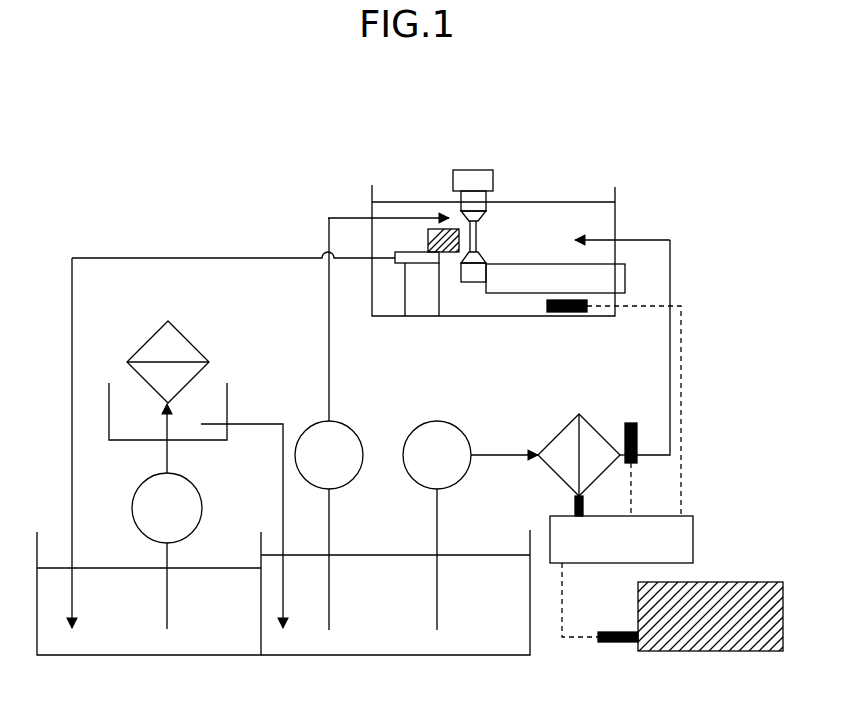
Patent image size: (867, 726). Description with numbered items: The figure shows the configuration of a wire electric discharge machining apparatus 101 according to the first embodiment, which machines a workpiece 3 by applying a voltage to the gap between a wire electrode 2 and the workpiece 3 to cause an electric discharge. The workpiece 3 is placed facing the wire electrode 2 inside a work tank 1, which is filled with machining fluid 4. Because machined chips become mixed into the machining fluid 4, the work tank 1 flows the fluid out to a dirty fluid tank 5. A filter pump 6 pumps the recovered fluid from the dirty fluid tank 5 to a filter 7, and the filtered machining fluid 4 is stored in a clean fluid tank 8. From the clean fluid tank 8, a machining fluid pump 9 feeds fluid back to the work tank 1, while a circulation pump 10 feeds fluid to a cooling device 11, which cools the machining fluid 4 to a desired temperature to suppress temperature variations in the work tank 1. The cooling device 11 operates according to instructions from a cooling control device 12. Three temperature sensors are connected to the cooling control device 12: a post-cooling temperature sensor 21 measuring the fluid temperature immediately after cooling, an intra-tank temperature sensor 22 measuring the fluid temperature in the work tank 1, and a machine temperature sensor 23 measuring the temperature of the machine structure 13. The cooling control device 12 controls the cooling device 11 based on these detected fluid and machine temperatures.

The wire electric discharge machining apparatus 101 is at (662, 133).
The work tank 1 is at (615, 209).
The wire electrode 2 is at (478, 235).
The workpiece 3 is at (436, 227).
The machining fluid 4 is at (565, 212).
The dirty fluid tank 5 is at (117, 656).
The filter pump 6 is at (198, 490).
The filter 7 is at (195, 348).
The clean fluid tank 8 is at (307, 656).
The machining fluid pump 9 is at (343, 424).
The circulation pump 10 is at (450, 424).
The cooling device 11 is at (558, 428).
The cooling control device 12 is at (693, 536).
The machine structure 13 is at (708, 652).
The post-cooling temperature sensor 21 is at (633, 422).
The intra-tank temperature sensor 22 is at (547, 308).
The machine temperature sensor 23 is at (618, 645).